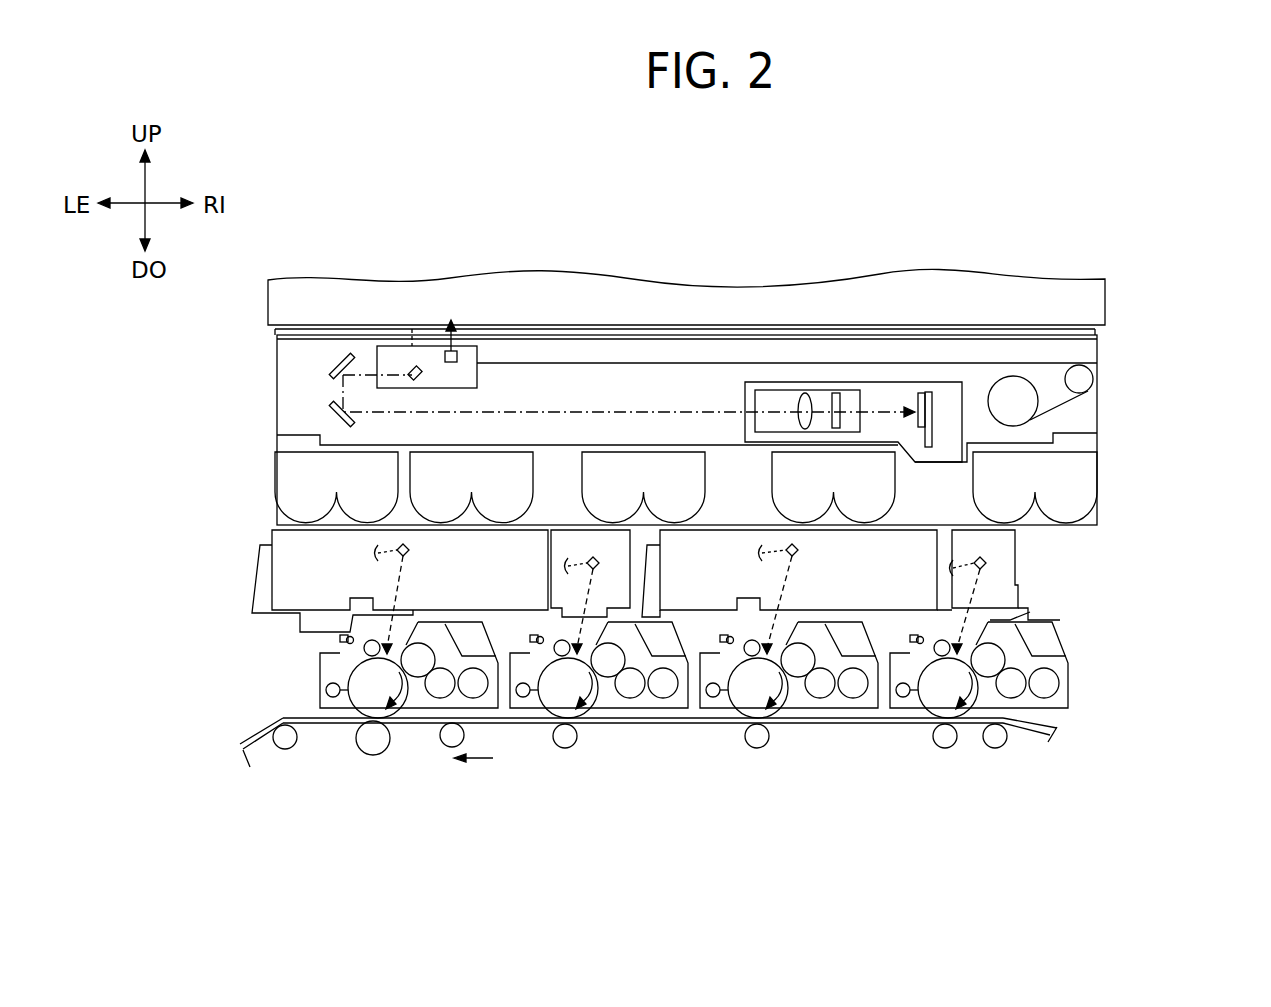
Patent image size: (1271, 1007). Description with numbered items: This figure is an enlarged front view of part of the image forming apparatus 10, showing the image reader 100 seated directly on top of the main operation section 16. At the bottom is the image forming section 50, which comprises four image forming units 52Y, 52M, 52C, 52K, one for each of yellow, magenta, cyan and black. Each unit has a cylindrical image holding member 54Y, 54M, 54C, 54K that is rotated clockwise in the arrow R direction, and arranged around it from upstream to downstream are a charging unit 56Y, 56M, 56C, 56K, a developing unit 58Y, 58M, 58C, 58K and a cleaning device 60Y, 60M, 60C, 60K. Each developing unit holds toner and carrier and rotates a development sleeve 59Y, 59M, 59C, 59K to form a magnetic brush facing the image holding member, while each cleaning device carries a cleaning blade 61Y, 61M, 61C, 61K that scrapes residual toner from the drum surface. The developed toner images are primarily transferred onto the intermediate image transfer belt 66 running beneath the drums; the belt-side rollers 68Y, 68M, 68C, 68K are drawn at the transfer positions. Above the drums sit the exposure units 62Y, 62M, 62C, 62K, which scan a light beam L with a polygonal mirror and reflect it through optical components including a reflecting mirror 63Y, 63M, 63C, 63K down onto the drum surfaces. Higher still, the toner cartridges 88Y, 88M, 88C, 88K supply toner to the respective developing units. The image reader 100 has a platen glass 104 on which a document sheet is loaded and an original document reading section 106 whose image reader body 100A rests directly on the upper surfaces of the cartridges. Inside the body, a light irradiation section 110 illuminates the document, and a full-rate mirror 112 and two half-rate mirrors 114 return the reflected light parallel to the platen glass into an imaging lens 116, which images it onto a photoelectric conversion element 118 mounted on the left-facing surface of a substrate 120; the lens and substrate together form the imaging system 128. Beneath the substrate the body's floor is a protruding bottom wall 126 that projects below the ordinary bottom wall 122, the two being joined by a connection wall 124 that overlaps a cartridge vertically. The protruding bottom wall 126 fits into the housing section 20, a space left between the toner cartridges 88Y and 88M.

The image forming apparatus 10 is at (1150, 582).
The main operation section 16 is at (178, 806).
The housing section 20 is at (912, 490).
The image forming section 50 is at (242, 691).
The intermediate image transfer belt 66 is at (1031, 746).
The image forming unit (black) 52K is at (488, 630).
The image forming unit (cyan) 52C is at (681, 630).
The image forming unit (magenta) 52M is at (866, 633).
The image forming unit (yellow) 52Y is at (1076, 678).
The image holding member (black) 54K is at (358, 712).
The image holding member (cyan) 54C is at (548, 712).
The image holding member (magenta) 54M is at (738, 712).
The image holding member (yellow) 54Y is at (928, 712).
The charging unit (black) 56K is at (345, 634).
The charging unit (cyan) 56C is at (540, 634).
The charging unit (magenta) 56M is at (728, 634).
The charging unit (yellow) 56Y is at (918, 634).
The developing unit (black) 58K is at (452, 748).
The developing unit (cyan) 58C is at (645, 712).
The developing unit (magenta) 58M is at (830, 712).
The developing unit (yellow) 58Y is at (1062, 645).
The development sleeve (black) 59K is at (418, 678).
The development sleeve (cyan) 59C is at (610, 690).
The development sleeve (magenta) 59M is at (800, 680).
The development sleeve (yellow) 59Y is at (992, 651).
The cleaning device (black) 60K is at (300, 746).
The cleaning device (cyan) 60C is at (512, 712).
The cleaning device (magenta) 60M is at (690, 712).
The cleaning device (yellow) 60Y is at (882, 712).
The cleaning blade (black) 61K is at (343, 712).
The cleaning blade (cyan) 61C is at (527, 700).
The cleaning blade (magenta) 61M is at (715, 700).
The cleaning blade (yellow) 61Y is at (905, 700).
The exposure unit (black) 62K is at (268, 538).
The exposure unit (cyan) 62C is at (575, 535).
The exposure unit (magenta) 62M is at (737, 532).
The exposure unit (yellow) 62Y is at (1018, 578).
The reflecting mirror (black) 63K is at (408, 545).
The reflecting mirror (cyan) 63C is at (598, 558).
The reflecting mirror (magenta) 63M is at (798, 550).
The reflecting mirror (yellow) 63Y is at (986, 563).
The transfer roller (black) 68K is at (386, 756).
The transfer roller (cyan) 68C is at (568, 750).
The transfer roller (magenta) 68M is at (760, 750).
The transfer roller (yellow) 68Y is at (952, 750).
The toner cartridge (black) 88K is at (300, 465).
The toner cartridge (cyan) 88C is at (596, 460).
The toner cartridge (magenta) 88M is at (770, 457).
The toner cartridge (yellow) 88Y is at (1097, 492).
The image reader 100 is at (1112, 298).
The image reader body 100A is at (1099, 349).
The platen glass 104 is at (548, 328).
The original document reading section 106 is at (1106, 401).
The light irradiation section 110 is at (459, 359).
The full-rate mirror 112 is at (422, 378).
The half-rate mirrors 114 is at (332, 361).
The imaging lens 116 is at (806, 392).
The photoelectric conversion element 118 is at (915, 392).
The substrate 120 is at (932, 391).
The bottom wall 122 is at (318, 445).
The connection wall 124 is at (975, 457).
The protruding bottom wall 126 is at (912, 462).
The imaging system 128 is at (863, 374).
The light beam L is at (1018, 603).